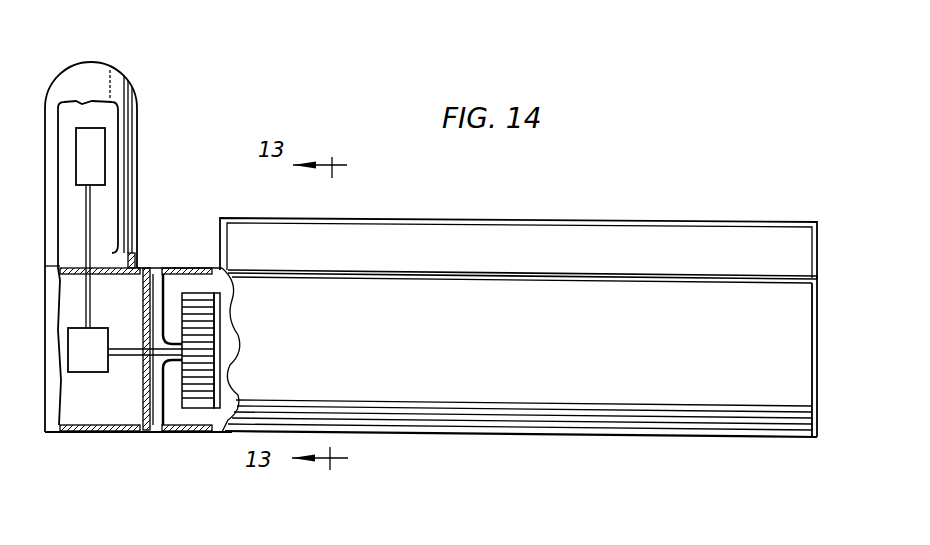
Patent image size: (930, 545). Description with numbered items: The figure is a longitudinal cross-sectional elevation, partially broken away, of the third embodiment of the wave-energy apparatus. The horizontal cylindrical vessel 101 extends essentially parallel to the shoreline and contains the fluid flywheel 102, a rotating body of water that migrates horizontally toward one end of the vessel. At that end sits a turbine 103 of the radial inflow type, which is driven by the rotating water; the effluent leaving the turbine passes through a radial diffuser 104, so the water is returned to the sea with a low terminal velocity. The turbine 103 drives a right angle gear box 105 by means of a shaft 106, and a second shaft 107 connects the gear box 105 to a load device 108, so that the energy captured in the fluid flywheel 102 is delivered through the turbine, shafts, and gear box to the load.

The cylindrical vessel 101 is at (632, 202).
The fluid flywheel 102 is at (492, 356).
The turbine 103 is at (222, 342).
The radial diffuser 104 is at (160, 276).
The right angle gear box 105 is at (100, 333).
The shaft 106 is at (125, 357).
The second shaft 107 is at (92, 213).
The load device 108 is at (97, 164).